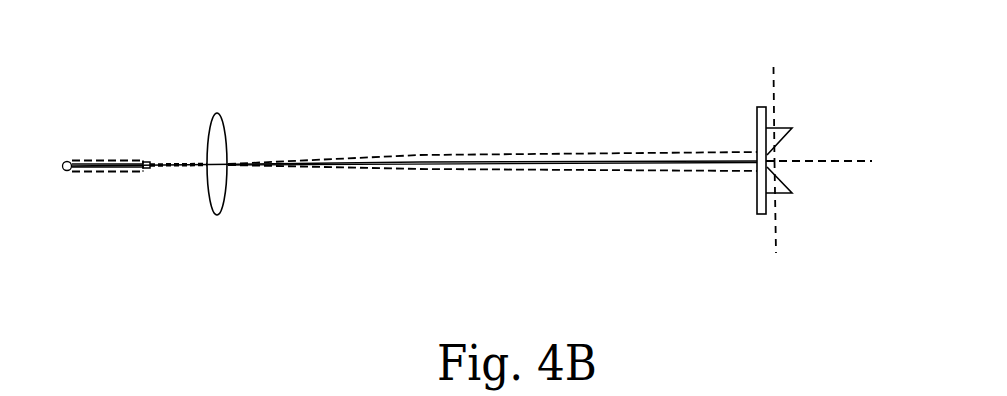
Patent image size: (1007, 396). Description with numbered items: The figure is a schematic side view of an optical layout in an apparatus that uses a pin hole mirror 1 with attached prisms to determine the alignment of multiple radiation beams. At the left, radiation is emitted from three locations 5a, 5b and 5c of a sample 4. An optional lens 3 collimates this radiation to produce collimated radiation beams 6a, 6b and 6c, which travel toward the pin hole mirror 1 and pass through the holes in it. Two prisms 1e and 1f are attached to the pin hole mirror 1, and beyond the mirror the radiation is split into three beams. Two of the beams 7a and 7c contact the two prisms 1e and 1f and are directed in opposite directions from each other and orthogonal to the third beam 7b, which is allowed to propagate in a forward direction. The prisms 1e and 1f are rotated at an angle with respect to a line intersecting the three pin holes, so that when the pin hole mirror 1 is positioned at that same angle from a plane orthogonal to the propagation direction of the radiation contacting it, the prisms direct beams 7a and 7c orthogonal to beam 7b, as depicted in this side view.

The pin hole mirror 1 is at (757, 117).
The prism 1e is at (792, 128).
The prism 1f is at (792, 193).
The lens 3 is at (214, 113).
The sample 4 is at (63, 166).
The location of sample 5a is at (88, 159).
The location of sample 5b is at (131, 160).
The location of sample 5c is at (108, 173).
The collimated radiation beam 6a is at (498, 171).
The collimated radiation beam 6b is at (555, 166).
The collimated radiation beam 6c is at (525, 154).
The beam 7a is at (776, 238).
The beam 7b is at (844, 157).
The beam 7c is at (774, 85).